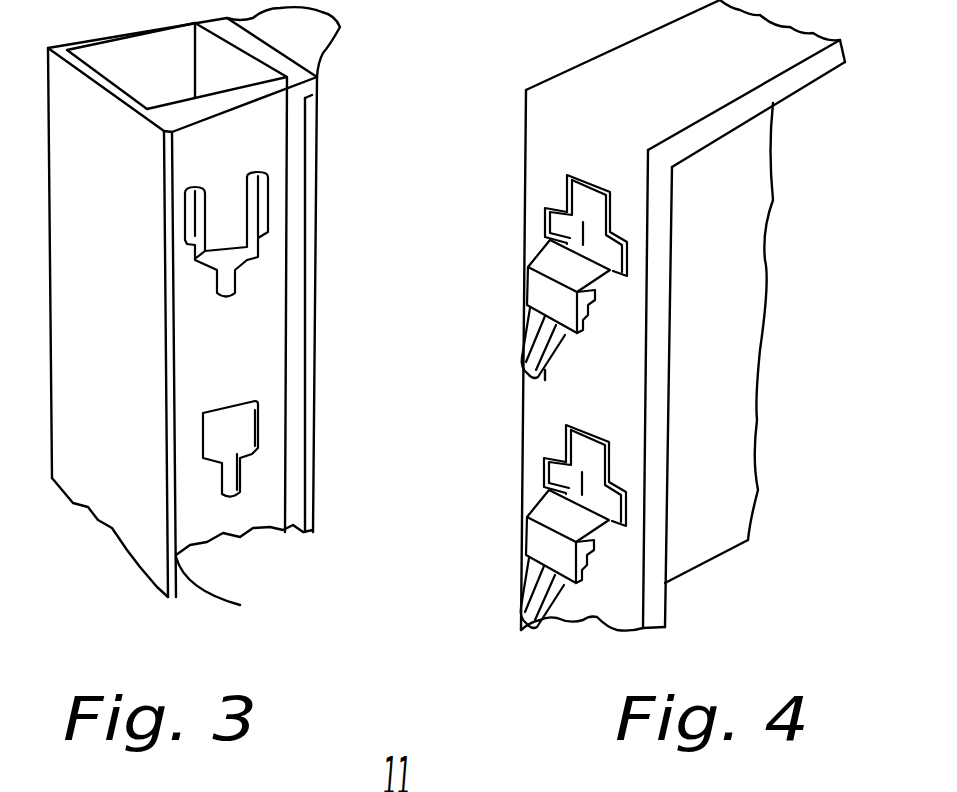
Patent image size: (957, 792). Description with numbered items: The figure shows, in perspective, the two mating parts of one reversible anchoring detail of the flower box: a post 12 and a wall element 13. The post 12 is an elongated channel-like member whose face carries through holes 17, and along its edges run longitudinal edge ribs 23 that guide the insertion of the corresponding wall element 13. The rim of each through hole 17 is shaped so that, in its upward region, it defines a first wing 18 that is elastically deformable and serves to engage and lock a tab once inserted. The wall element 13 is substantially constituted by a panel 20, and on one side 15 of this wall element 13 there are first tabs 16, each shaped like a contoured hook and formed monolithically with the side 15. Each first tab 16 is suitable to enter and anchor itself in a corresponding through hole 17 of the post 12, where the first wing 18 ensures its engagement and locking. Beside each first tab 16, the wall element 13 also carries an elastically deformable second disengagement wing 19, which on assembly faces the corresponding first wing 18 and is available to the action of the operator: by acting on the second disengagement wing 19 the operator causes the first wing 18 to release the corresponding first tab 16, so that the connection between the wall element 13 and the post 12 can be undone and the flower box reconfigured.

In FIG. 3, the post 12 is at (93, 477).
In FIG. 3, the longitudinal edge rib 23 is at (240, 605).
In FIG. 3, the first wing 18 is at (222, 225).
In FIG. 3, the through hole 17 is at (222, 275).
In FIG. 4, the wall element 13 is at (752, 305).
In FIG. 4, the panel 20 is at (747, 207).
In FIG. 4, the side 15 is at (567, 390).
In FIG. 4, the first tab 16 is at (540, 250).
In FIG. 4, the second disengagement wing 19 is at (585, 196).